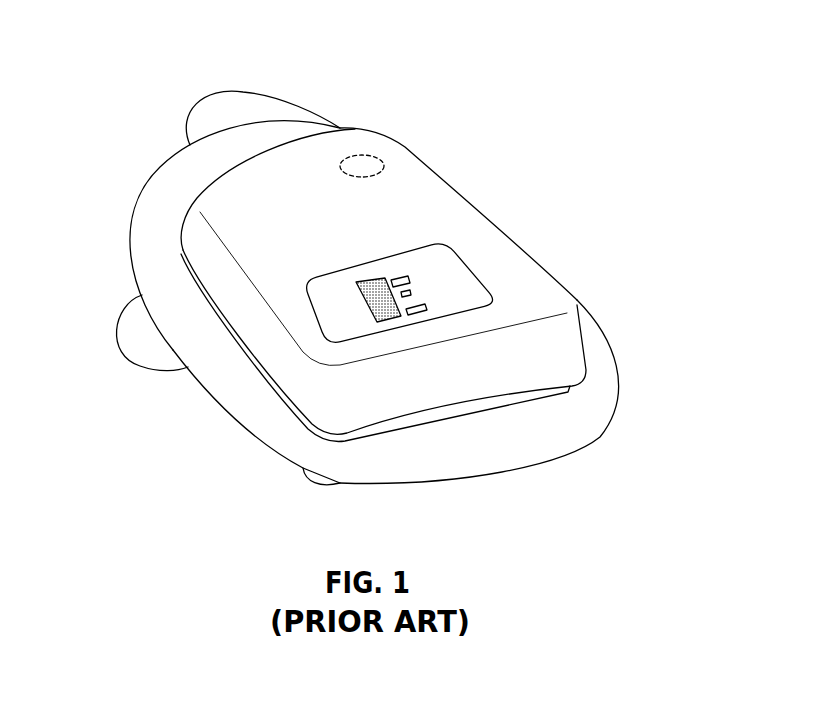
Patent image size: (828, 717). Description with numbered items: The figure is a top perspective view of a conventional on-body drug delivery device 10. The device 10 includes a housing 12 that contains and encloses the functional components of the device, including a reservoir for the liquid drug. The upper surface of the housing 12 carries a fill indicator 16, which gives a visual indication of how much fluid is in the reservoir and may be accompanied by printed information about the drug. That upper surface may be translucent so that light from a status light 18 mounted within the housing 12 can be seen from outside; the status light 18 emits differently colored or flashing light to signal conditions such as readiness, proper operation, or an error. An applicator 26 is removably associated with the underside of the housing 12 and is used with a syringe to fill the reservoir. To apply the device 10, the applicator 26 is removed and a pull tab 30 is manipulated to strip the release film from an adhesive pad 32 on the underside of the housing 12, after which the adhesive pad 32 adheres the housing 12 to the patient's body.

The on-body device 10 is at (536, 190).
The housing 12 is at (542, 273).
The fill indicator 16 is at (360, 297).
The status light 18 is at (365, 150).
The applicator 26 is at (245, 102).
The pull tab 30 is at (140, 333).
The adhesive pad 32 is at (480, 467).